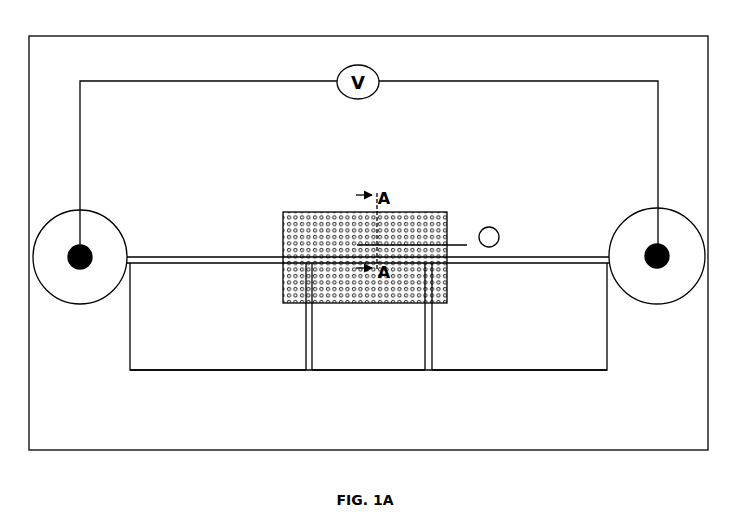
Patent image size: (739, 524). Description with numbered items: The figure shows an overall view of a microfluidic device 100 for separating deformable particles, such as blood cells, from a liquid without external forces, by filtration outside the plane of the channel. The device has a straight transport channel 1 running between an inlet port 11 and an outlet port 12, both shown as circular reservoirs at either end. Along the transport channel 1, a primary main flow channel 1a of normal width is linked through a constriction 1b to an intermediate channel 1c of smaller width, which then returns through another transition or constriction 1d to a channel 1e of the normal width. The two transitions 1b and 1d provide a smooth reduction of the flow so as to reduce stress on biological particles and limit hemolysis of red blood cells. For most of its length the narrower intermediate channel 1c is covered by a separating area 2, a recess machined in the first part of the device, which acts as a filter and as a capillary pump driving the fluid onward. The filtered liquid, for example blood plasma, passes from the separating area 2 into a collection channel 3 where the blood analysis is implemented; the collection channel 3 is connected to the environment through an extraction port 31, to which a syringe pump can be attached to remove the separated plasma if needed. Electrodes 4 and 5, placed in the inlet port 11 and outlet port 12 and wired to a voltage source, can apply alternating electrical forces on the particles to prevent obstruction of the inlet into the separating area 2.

The microfluidic device 100 is at (368, 228).
The transport channel 1 is at (369, 341).
The primary main flow channel 1a is at (218, 378).
The constriction 1b is at (312, 325).
The intermediate channel 1c is at (368, 378).
The transition or constriction 1d is at (430, 325).
The channel having the normal width 1e is at (519, 378).
The separating area 2 is at (310, 223).
The collection channel 3 is at (465, 242).
The extraction port 31 is at (492, 233).
The electrode 4 is at (75, 243).
The electrode 5 is at (662, 242).
The inlet port 11 is at (85, 305).
The outlet port 12 is at (640, 303).